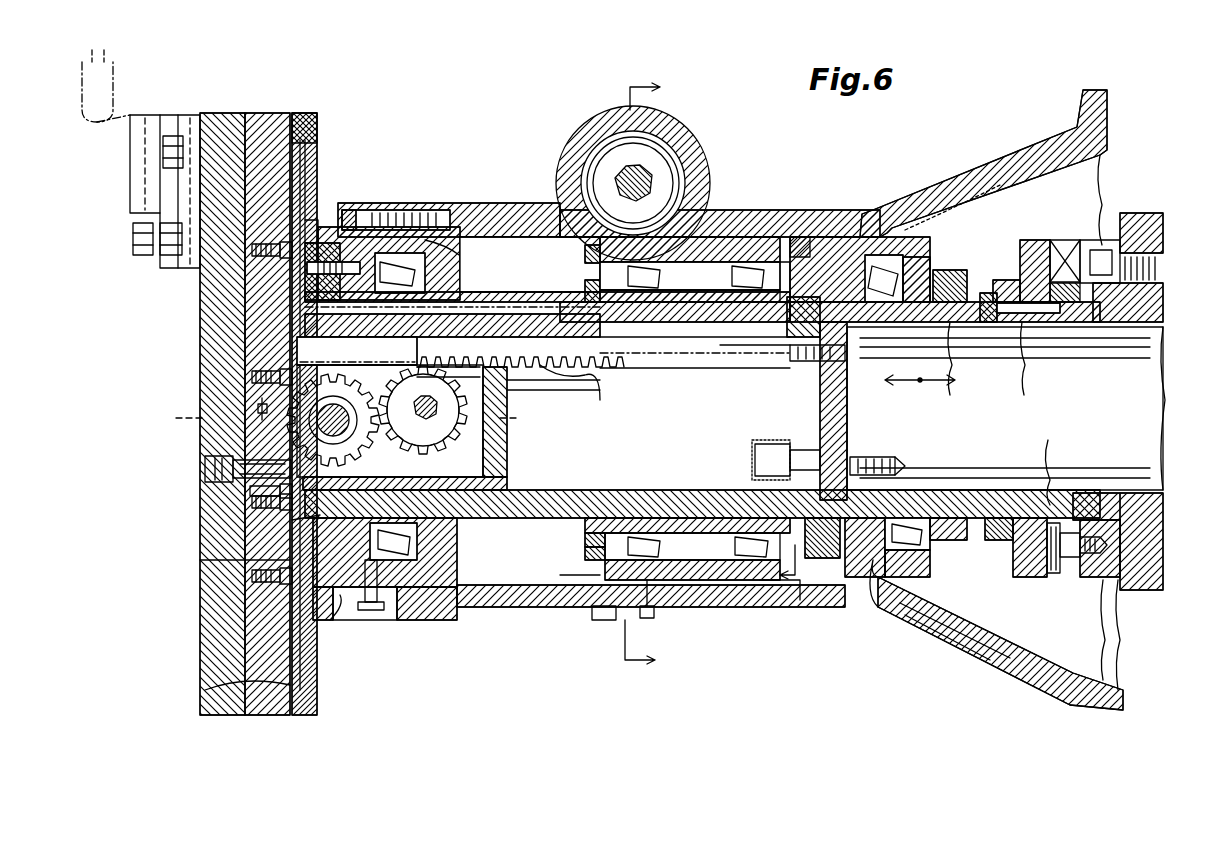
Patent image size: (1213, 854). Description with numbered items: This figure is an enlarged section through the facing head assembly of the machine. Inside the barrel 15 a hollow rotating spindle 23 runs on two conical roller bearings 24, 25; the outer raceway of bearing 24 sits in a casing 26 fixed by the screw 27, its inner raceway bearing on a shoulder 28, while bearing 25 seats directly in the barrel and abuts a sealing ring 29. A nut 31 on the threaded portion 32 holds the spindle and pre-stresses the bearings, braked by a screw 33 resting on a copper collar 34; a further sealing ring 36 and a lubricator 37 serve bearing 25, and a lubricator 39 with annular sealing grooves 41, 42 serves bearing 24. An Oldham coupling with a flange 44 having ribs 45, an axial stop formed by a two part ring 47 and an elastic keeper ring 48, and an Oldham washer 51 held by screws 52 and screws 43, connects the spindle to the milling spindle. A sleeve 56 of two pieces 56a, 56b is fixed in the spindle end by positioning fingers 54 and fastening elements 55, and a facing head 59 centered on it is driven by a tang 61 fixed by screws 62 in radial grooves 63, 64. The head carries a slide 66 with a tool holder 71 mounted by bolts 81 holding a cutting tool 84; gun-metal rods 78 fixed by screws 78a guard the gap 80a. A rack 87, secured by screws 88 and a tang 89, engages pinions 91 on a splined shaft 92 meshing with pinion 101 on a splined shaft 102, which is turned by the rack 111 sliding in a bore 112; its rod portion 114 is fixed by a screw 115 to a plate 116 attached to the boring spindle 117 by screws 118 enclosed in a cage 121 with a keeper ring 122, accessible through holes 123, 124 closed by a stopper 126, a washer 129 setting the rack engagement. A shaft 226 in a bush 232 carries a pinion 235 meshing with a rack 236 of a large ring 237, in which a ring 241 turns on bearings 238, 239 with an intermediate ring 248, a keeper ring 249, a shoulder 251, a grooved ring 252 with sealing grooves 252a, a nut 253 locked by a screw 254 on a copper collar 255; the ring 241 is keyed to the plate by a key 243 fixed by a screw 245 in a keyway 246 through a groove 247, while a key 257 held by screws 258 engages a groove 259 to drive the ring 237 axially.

The barrel 15 is at (468, 608).
The hollow rotating spindle 23 is at (520, 518).
The conical roller bearing 24 is at (530, 265).
The conical roller bearing 25 is at (880, 262).
The casing 26 is at (395, 205).
The screw 27 is at (430, 206).
The shoulder 28 is at (428, 285).
The sealing ring 29 is at (920, 257).
The nut 31 is at (960, 262).
The threaded portion 32 is at (988, 293).
The screw 33 is at (950, 270).
The collar 34 is at (955, 365).
The sealing ring 36 is at (835, 238).
The lubricator 37 is at (880, 610).
The lubricator 39 is at (372, 610).
The annular sealing grooves 41 is at (460, 318).
The annular sealing grooves 42 is at (1090, 240).
The screws 43 is at (1140, 213).
The flange 44 is at (1035, 240).
The ribs 45 is at (1026, 355).
The two part ring 47 is at (990, 540).
The elastic keeper ring 48 is at (1052, 462).
The Oldham washer 51 is at (1054, 574).
The screws 52 is at (1090, 558).
The positioning fingers 54 is at (380, 320).
The pinion gear 55 is at (350, 430).
The sleeve 56 is at (362, 340).
The sleeve piece 56a is at (425, 478).
The sleeve piece 56b is at (507, 440).
The facing head 59 is at (306, 660).
The tang 61 is at (306, 160).
The screws 62 is at (440, 250).
The radial groove 63 is at (330, 243).
The radial groove 64 is at (312, 220).
The slide 66 is at (210, 590).
The tool holder 71 is at (175, 268).
The gun-metal rods 78 is at (312, 120).
The screws 78a is at (300, 112).
The gap 80a is at (215, 688).
The bolts 81 is at (170, 248).
The cutting tool 84 is at (135, 140).
The rack 87 is at (260, 316).
The screws 88 is at (258, 252).
The tang 89 is at (258, 405).
The toothed pinions 91 is at (328, 416).
The splined shaft 92 is at (319, 420).
The toothed pinion 101 is at (435, 445).
The splined shaft 102 is at (423, 410).
The rack 111 is at (575, 370).
The longitudinal bore 112 is at (598, 378).
The rod portion 114 is at (695, 352).
The screw 115 is at (790, 352).
The plate 116 is at (820, 398).
The boring spindle 117 is at (1006, 408).
The screws 118 is at (885, 458).
The cylindrical cage 121 is at (775, 450).
The elastic keeper ring 122 is at (755, 450).
The hole 123 is at (250, 490).
The hole 124 is at (507, 468).
The closure stopper 126 is at (212, 462).
The washer 129 is at (293, 520).
The shaft 226 is at (638, 168).
The bush 232 is at (570, 140).
The toothed pinion 235 is at (662, 155).
The rack 236 is at (700, 238).
The large ring 237 is at (690, 264).
The conical roller bearing 238 is at (660, 276).
The conical roller bearing 239 is at (770, 262).
The ring 241 is at (678, 518).
The key 243 is at (787, 312).
The screw 245 is at (805, 238).
The keyway 246 is at (738, 342).
The longitudinal groove 247 is at (675, 311).
The intermediate ring 248 is at (700, 580).
The annular keeper ring 249 is at (825, 580).
The shoulder 251 is at (692, 546).
The ring 252 is at (585, 552).
The annular sealing grooves 252a is at (567, 565).
The nut 253 is at (585, 536).
The screw 254 is at (585, 252).
The copper collar 255 is at (585, 290).
The key 257 is at (600, 618).
The screws 258 is at (655, 615).
The longitudinal groove 259 is at (765, 598).